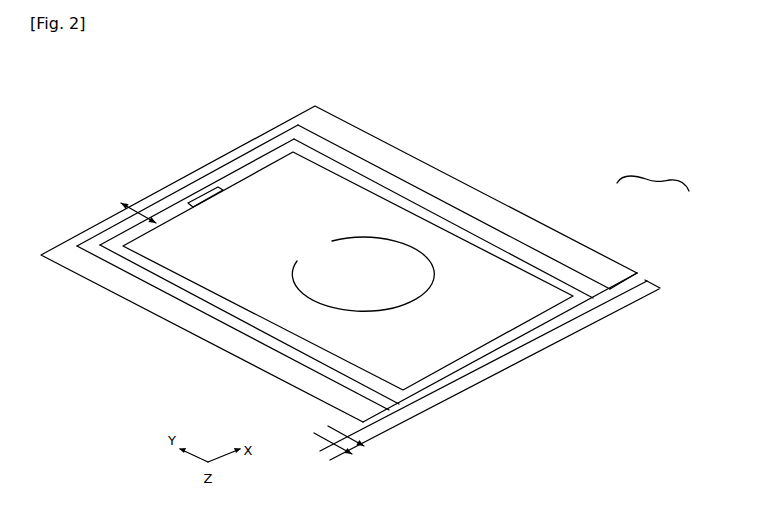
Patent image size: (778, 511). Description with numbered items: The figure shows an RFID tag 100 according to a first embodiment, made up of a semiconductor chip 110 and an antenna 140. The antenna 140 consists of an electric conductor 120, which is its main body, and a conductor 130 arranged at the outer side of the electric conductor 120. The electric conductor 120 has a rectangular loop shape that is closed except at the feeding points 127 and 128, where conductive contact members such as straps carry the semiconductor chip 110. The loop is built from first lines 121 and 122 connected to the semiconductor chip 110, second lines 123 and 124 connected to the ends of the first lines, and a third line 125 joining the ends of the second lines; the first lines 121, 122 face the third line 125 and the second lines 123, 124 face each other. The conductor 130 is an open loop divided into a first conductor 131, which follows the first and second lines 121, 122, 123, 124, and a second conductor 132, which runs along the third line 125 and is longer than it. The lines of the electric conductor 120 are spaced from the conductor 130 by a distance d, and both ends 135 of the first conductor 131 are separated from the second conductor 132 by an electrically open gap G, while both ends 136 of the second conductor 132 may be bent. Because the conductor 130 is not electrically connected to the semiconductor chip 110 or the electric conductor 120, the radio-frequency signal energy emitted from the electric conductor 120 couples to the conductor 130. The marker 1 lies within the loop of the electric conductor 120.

The RFID tag 100 is at (379, 272).
The semiconductor chip 110 is at (213, 199).
The electric conductor 120 is at (339, 263).
The first line 121 is at (165, 196).
The first line 122 is at (267, 152).
The second line 123 is at (243, 313).
The second line 124 is at (398, 177).
The third line 125 is at (500, 347).
The feeding point 127 is at (175, 208).
The feeding point 128 is at (213, 186).
The conductor 130 is at (494, 343).
The first conductor 131 is at (601, 268).
The second conductor 132 is at (642, 283).
The ends of the first conductor 135 is at (635, 285).
The ends of the second conductor 136 is at (663, 284).
The antenna 140 is at (653, 175).
The display region 1 is at (362, 274).
The distance d is at (141, 208).
The gap G is at (333, 448).